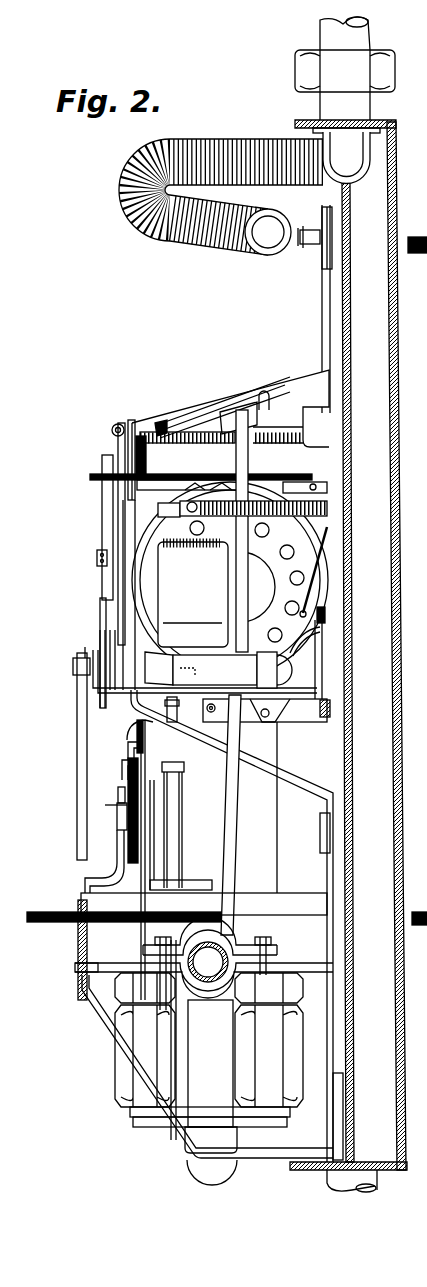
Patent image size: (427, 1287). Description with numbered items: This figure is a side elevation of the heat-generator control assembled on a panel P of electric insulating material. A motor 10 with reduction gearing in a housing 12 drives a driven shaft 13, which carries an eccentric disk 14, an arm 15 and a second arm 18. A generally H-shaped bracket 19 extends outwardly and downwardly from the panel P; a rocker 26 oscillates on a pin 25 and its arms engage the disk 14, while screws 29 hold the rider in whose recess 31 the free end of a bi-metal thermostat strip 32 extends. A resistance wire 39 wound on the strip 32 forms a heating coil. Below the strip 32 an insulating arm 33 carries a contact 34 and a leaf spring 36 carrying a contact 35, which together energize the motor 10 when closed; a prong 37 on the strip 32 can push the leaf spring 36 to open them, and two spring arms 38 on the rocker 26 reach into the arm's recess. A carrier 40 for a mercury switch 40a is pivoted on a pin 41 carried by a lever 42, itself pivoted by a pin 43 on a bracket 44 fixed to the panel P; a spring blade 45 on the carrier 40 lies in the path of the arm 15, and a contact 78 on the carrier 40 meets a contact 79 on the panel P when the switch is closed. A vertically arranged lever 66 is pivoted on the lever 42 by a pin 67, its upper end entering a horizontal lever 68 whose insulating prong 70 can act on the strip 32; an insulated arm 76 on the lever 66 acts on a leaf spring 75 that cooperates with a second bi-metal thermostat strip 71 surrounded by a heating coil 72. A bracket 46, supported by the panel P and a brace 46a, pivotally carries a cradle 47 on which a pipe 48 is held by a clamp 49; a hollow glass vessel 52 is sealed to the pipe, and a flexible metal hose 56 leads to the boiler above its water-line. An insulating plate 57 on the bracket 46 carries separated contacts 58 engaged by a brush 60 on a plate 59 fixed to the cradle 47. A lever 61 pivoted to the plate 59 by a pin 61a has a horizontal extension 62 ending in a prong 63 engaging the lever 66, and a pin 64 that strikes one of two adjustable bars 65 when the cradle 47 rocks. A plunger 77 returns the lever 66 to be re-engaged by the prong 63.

The panel P is at (340, 301).
The flexible metal hose 56 is at (152, 228).
The H-shaped bracket 19 is at (323, 312).
The bi-metal thermostat strip 32 is at (297, 428).
The resistance wire 39 is at (263, 393).
The horizontal lever 68 is at (232, 413).
The pin 67 is at (183, 424).
The prong 70 is at (157, 424).
The contact 34 is at (170, 481).
The contact 35 is at (200, 486).
The arm 33 is at (90, 477).
The prong 37 is at (140, 455).
The screws 29 is at (115, 428).
The recess 31 is at (120, 450).
The spring arms 38 is at (102, 515).
The pin 25 is at (105, 552).
The disk 14 is at (100, 610).
The rocker 26 is at (110, 590).
The leaf spring 36 is at (160, 508).
The motor 10 is at (315, 595).
The housing 12 is at (165, 577).
The insulated arm 76 is at (215, 548).
The leaf spring 75 is at (170, 518).
The heating coil 72 is at (328, 508).
The second bi-metal thermostat strip 71 is at (310, 492).
The contact 79 is at (325, 545).
The contact 78 is at (325, 618).
The spring blade 45 is at (84, 650).
The driven shaft 13 is at (73, 666).
The arm 15 is at (92, 680).
The second arm 18 is at (79, 800).
The carrier 40 is at (203, 668).
The mercury switch 40a is at (290, 672).
The bracket 44 is at (330, 708).
The pin 41 is at (270, 722).
The lever 42 is at (320, 722).
The pin 43 is at (220, 735).
The vertically arranged lever 66 is at (234, 842).
The plate 57 is at (140, 768).
The separated contacts 58 is at (128, 742).
The insulated brush 60 is at (122, 762).
The bars 65 is at (118, 795).
The pin 64 is at (116, 822).
The pin 61a is at (115, 856).
The lever 61 is at (176, 850).
The hollow glass vessel 52 is at (300, 863).
The horizontal extension 62 is at (190, 884).
The plate 59 is at (170, 908).
The prong 63 is at (225, 895).
The plunger 77 is at (52, 925).
The clamp 49 is at (222, 946).
The pipe 48 is at (190, 985).
The cradle 47 is at (95, 975).
The brace 46a is at (78, 968).
The bracket 46 is at (100, 1020).